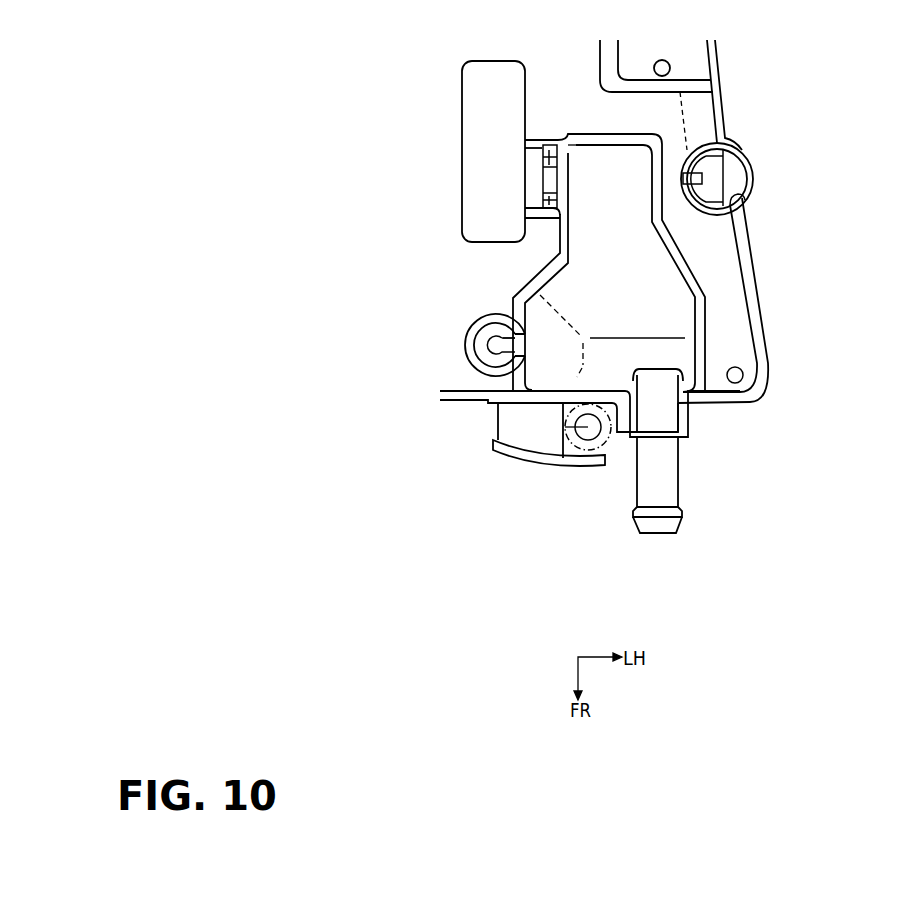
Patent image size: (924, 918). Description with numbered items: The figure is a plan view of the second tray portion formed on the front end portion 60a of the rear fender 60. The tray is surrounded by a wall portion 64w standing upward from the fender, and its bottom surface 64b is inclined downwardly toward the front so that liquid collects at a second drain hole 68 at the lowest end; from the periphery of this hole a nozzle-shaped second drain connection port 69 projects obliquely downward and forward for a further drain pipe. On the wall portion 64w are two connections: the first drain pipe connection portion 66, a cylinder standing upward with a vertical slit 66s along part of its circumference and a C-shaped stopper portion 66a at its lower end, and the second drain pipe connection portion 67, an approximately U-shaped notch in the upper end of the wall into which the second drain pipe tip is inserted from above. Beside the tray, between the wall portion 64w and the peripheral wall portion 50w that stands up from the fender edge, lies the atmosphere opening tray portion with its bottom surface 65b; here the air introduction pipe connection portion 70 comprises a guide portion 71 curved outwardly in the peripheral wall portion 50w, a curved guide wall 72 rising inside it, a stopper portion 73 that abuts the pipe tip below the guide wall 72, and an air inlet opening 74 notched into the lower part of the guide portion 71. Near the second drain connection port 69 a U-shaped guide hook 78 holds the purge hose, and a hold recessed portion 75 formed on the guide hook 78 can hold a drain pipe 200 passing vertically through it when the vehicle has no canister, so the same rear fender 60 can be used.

The rear fender 60 is at (723, 103).
The front end portion of the rear fender 60a is at (463, 402).
The peripheral wall portion 50w is at (738, 245).
The bottom surface of the second tray portion 64b is at (667, 290).
The bottom surface of the atmosphere opening tray portion 65b is at (720, 263).
The wall portion 64w is at (532, 277).
The first drain pipe connection portion 66 is at (465, 335).
The stopper portion 66a is at (477, 352).
The slit 66s is at (488, 337).
The second drain pipe connection portion 67 is at (555, 178).
The second drain hole 68 is at (663, 421).
The second drain connection port 69 is at (672, 487).
The air introduction pipe connection portion 70 is at (836, 105).
The guide portion 71 is at (737, 150).
The guide wall 72 is at (690, 164).
The stopper portion 73 is at (702, 182).
The air inlet opening 74 is at (747, 191).
The hold recessed portion 75 is at (588, 448).
The guide hook 78 is at (533, 458).
The drain pipe 200 is at (607, 447).